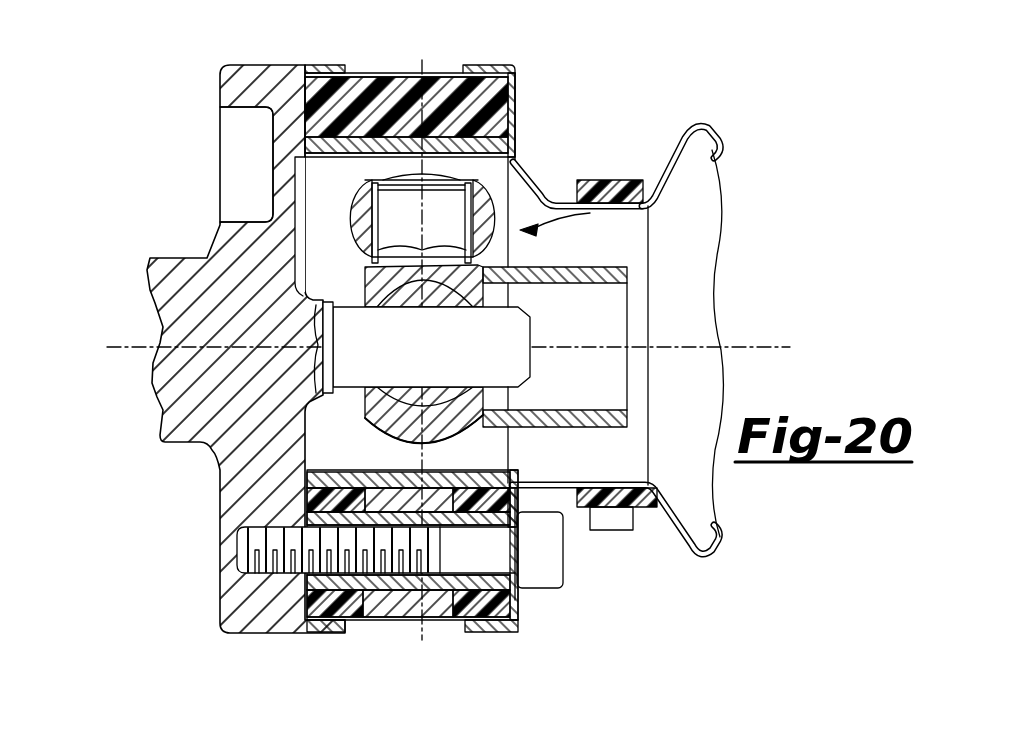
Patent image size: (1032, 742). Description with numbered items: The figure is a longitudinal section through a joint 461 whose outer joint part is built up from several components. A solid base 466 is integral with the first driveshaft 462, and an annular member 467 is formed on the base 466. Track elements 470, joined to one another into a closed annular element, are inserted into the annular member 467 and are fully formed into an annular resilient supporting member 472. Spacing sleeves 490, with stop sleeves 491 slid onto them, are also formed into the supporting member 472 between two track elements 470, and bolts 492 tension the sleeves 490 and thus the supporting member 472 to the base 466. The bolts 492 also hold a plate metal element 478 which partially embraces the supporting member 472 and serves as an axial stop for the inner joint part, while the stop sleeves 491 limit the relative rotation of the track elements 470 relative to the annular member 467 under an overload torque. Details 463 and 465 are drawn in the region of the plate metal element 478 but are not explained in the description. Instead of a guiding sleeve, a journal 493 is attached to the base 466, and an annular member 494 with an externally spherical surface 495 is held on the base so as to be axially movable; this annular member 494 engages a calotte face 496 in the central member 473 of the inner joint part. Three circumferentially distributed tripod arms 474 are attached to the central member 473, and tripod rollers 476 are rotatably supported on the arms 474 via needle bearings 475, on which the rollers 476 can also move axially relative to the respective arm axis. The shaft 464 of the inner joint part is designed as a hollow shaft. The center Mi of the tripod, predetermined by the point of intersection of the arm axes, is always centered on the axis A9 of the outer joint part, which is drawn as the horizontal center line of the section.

The pivot assembly 461 is at (197, 110).
The first driveshaft 462 is at (185, 270).
The retaining ring 463 is at (612, 198).
The shaft 464 is at (610, 267).
The spring clip 465 is at (713, 137).
The base 466 is at (247, 232).
The annular member 467 is at (317, 63).
The track elements 470 is at (447, 207).
The supporting member 472 is at (370, 88).
The central member 473 is at (317, 620).
The tripod arms 474 is at (450, 165).
The needle bearings 475 is at (450, 207).
The tripod rollers 476 is at (500, 200).
The plate metal element 478 is at (560, 497).
The spacing sleeves 490 is at (517, 603).
The stop sleeves 491 is at (437, 603).
The bolts 492 is at (547, 547).
The journal 493 is at (353, 370).
The annular member 494 is at (400, 397).
The externally spherical surface 495 is at (405, 407).
The calotte face 496 is at (418, 445).
The axis of the outer joint part A9 is at (137, 347).
The center of the tripod Mi is at (427, 350).